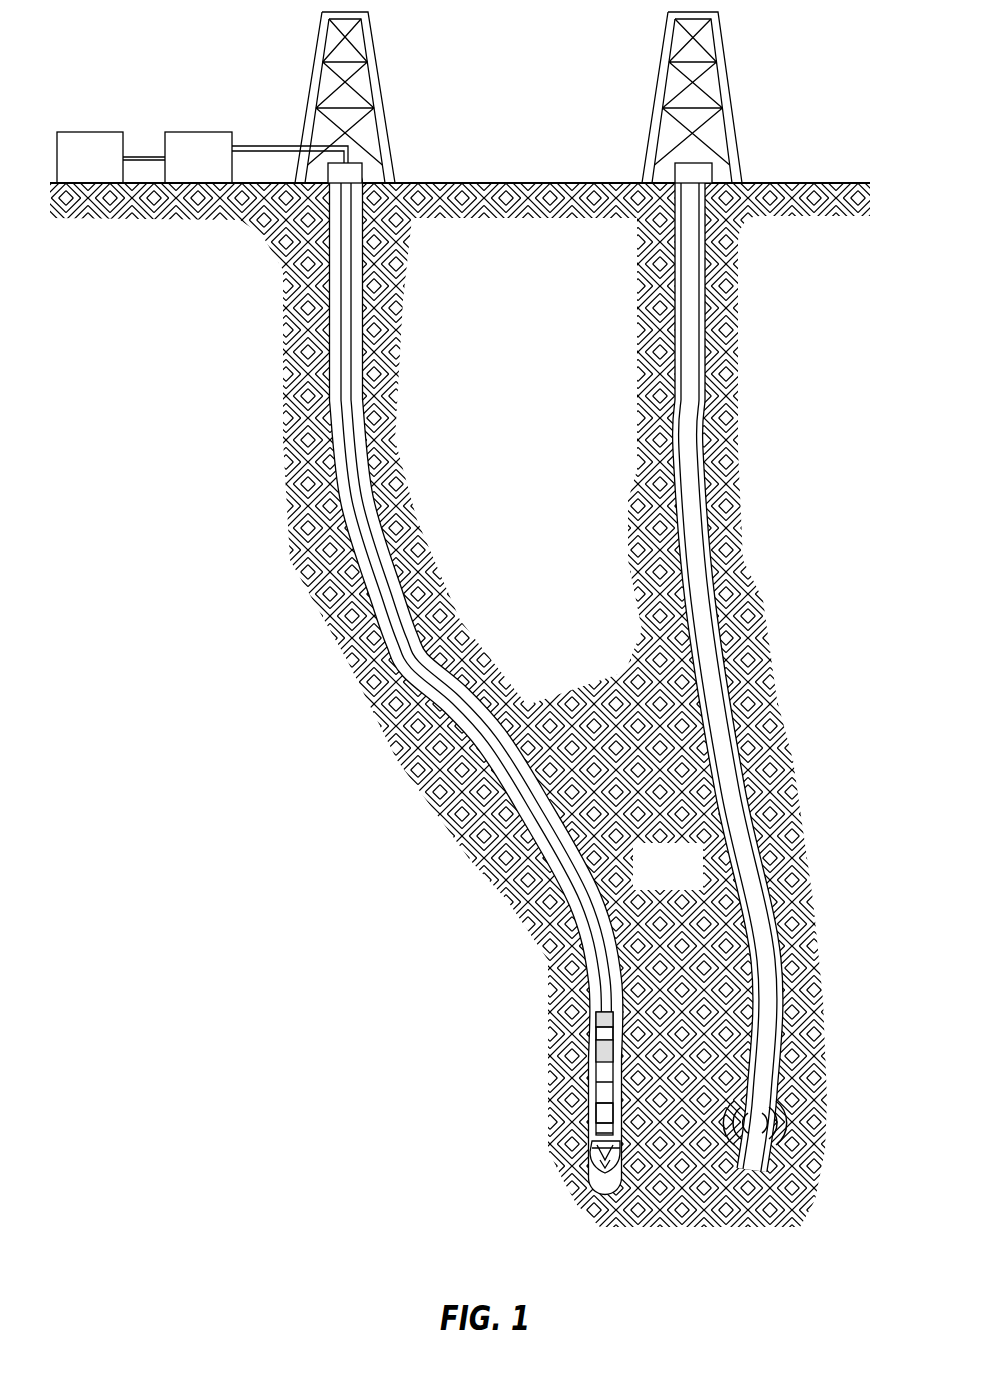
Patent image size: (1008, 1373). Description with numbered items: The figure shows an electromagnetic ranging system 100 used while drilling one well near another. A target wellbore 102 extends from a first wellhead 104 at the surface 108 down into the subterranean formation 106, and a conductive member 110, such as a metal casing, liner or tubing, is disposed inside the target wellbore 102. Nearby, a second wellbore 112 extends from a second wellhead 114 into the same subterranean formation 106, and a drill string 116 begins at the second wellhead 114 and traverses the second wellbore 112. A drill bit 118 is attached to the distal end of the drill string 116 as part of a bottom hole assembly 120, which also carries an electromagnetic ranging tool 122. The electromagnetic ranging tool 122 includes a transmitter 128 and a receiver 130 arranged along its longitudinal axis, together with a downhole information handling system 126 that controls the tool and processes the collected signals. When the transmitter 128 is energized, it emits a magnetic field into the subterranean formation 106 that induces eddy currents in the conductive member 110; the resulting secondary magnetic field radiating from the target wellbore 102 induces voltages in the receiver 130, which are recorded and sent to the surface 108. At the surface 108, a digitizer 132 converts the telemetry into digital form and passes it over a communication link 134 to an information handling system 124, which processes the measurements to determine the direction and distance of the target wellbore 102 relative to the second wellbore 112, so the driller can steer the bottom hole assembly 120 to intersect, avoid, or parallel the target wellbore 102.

The electromagnetic ranging system 100 is at (284, 744).
The target wellbore 102 is at (712, 336).
The first wellhead 104 is at (705, 173).
The subterranean formation 106 is at (693, 882).
The surface 108 is at (515, 178).
The conductive member 110 is at (725, 745).
The second wellbore 112 is at (336, 364).
The second wellhead 114 is at (357, 172).
The drill string 116 is at (390, 635).
The drill bit 118 is at (605, 1168).
The bottom hole assembly 120 is at (564, 1106).
The electromagnetic ranging tool 122 is at (598, 1050).
The information handling system 124 is at (118, 174).
The downhole information handling system 126 is at (602, 1020).
The transmitter 128 is at (602, 1038).
The receiver 130 is at (603, 1112).
The digitizer 132 is at (224, 174).
The communication link 134 is at (145, 155).